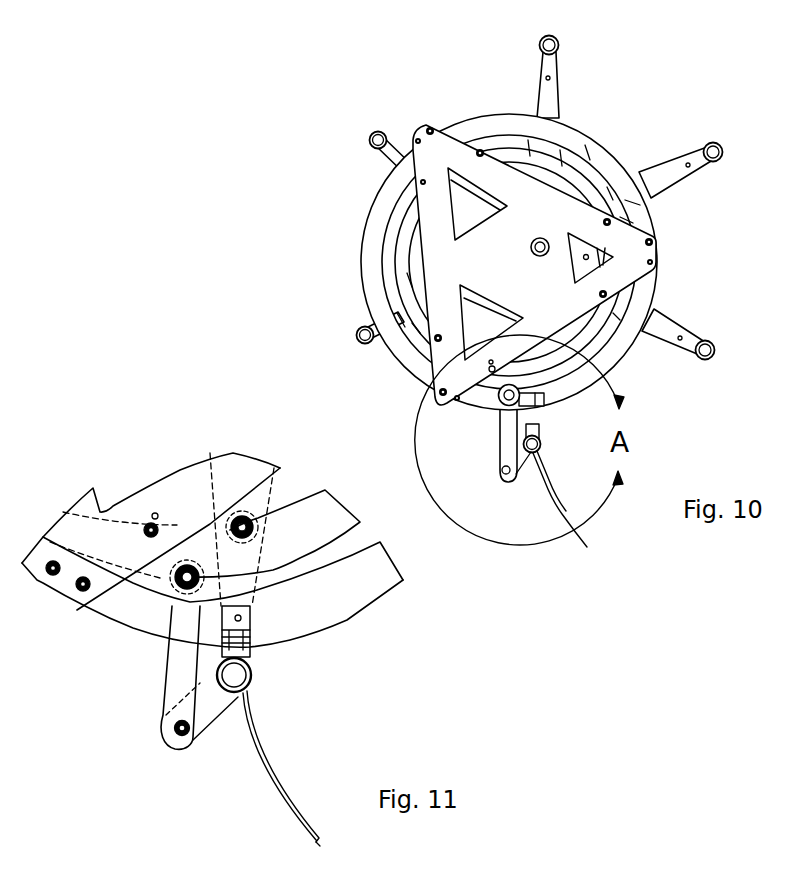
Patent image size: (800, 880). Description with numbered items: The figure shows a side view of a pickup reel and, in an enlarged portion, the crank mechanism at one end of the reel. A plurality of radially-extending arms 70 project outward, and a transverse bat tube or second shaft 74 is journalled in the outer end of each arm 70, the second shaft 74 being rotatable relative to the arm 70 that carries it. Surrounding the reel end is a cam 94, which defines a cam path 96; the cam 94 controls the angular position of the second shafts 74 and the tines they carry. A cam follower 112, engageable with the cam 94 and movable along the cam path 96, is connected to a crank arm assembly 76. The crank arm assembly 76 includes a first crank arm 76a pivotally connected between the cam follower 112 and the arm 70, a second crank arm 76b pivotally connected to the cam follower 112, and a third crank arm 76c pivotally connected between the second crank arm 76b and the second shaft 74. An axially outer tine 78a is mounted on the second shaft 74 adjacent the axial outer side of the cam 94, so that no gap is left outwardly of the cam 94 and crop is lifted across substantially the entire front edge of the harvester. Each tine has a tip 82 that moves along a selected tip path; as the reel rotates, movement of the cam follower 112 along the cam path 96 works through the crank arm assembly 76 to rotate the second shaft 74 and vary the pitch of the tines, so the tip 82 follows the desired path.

In FIG. 10, the radially-extending arm 70 is at (558, 101).
In FIG. 11, the radially-extending arm 70 is at (213, 488).
In FIG. 10, the second shaft 74 is at (377, 130).
In FIG. 11, the second shaft 74 is at (253, 673).
In FIG. 10, the crank arm assembly 76 is at (487, 483).
In FIG. 11, the first crank arm 76a is at (177, 528).
In FIG. 10, the second crank arm 76b is at (497, 447).
In FIG. 11, the second crank arm 76b is at (172, 676).
In FIG. 10, the third crank arm 76c is at (526, 464).
In FIG. 11, the third crank arm 76c is at (212, 728).
In FIG. 11, the axially outer tine 78a is at (273, 768).
In FIG. 10, the tip 82 is at (577, 508).
In FIG. 11, the tip 82 is at (320, 846).
In FIG. 10, the cam 94 is at (372, 271).
In FIG. 11, the cam 94 is at (110, 608).
In FIG. 10, the cam path 96 is at (386, 201).
In FIG. 11, the cam path 96 is at (313, 562).
In FIG. 10, the cam follower 112 is at (500, 418).
In FIG. 11, the cam follower 112 is at (110, 610).